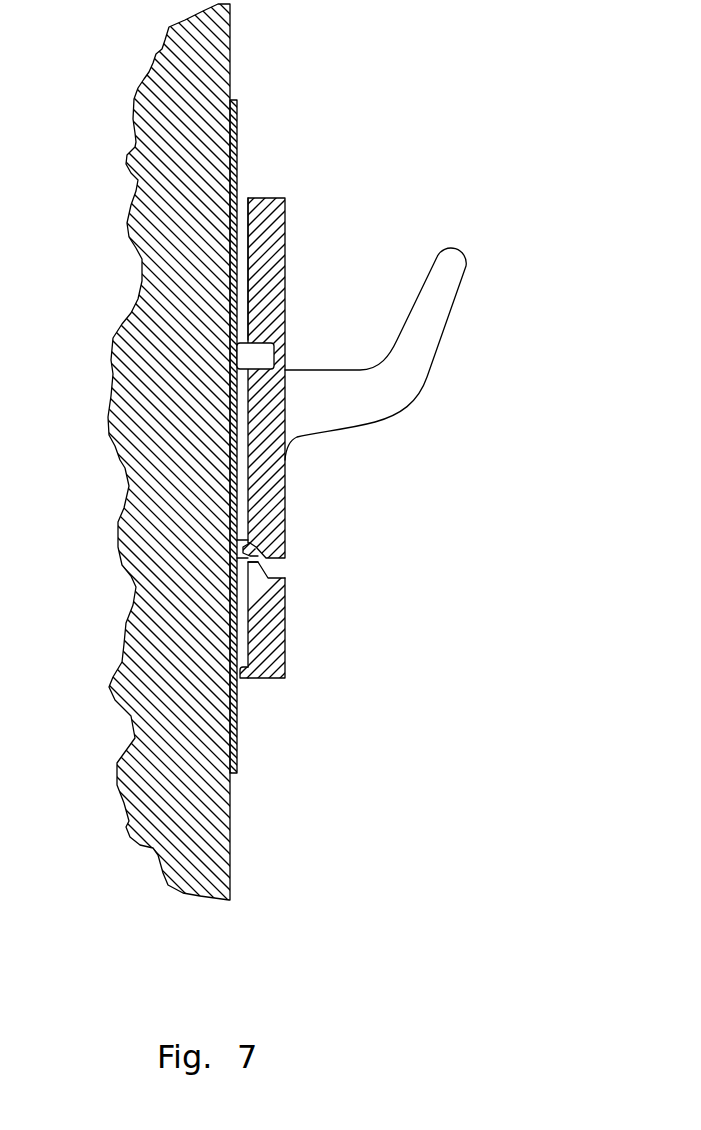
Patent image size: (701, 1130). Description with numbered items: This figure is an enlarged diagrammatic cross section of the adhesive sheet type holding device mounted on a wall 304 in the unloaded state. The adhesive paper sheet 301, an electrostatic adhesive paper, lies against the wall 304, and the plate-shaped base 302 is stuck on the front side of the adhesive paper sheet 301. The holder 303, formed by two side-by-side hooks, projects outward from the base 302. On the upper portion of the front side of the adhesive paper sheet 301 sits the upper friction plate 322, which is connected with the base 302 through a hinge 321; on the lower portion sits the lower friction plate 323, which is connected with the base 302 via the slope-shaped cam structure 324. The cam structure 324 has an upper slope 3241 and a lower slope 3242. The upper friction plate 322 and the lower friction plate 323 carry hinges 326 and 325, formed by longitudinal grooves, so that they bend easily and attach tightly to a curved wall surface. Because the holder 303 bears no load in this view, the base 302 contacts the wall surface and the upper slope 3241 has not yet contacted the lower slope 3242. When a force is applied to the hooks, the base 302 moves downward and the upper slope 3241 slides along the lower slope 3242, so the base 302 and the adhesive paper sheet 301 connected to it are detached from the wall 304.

The wall 304 is at (212, 62).
The adhesive paper sheet 301 is at (233, 137).
The hinge 326 is at (247, 203).
The upper friction plate 322 is at (270, 237).
The hinge 321 is at (283, 358).
The holder 303 is at (440, 297).
The base 302 is at (330, 552).
The upper slope 3241 is at (281, 530).
The cam structure 324 is at (329, 548).
The lower slope 3242 is at (268, 571).
The lower friction plate 323 is at (272, 638).
The hinge 325 is at (243, 672).